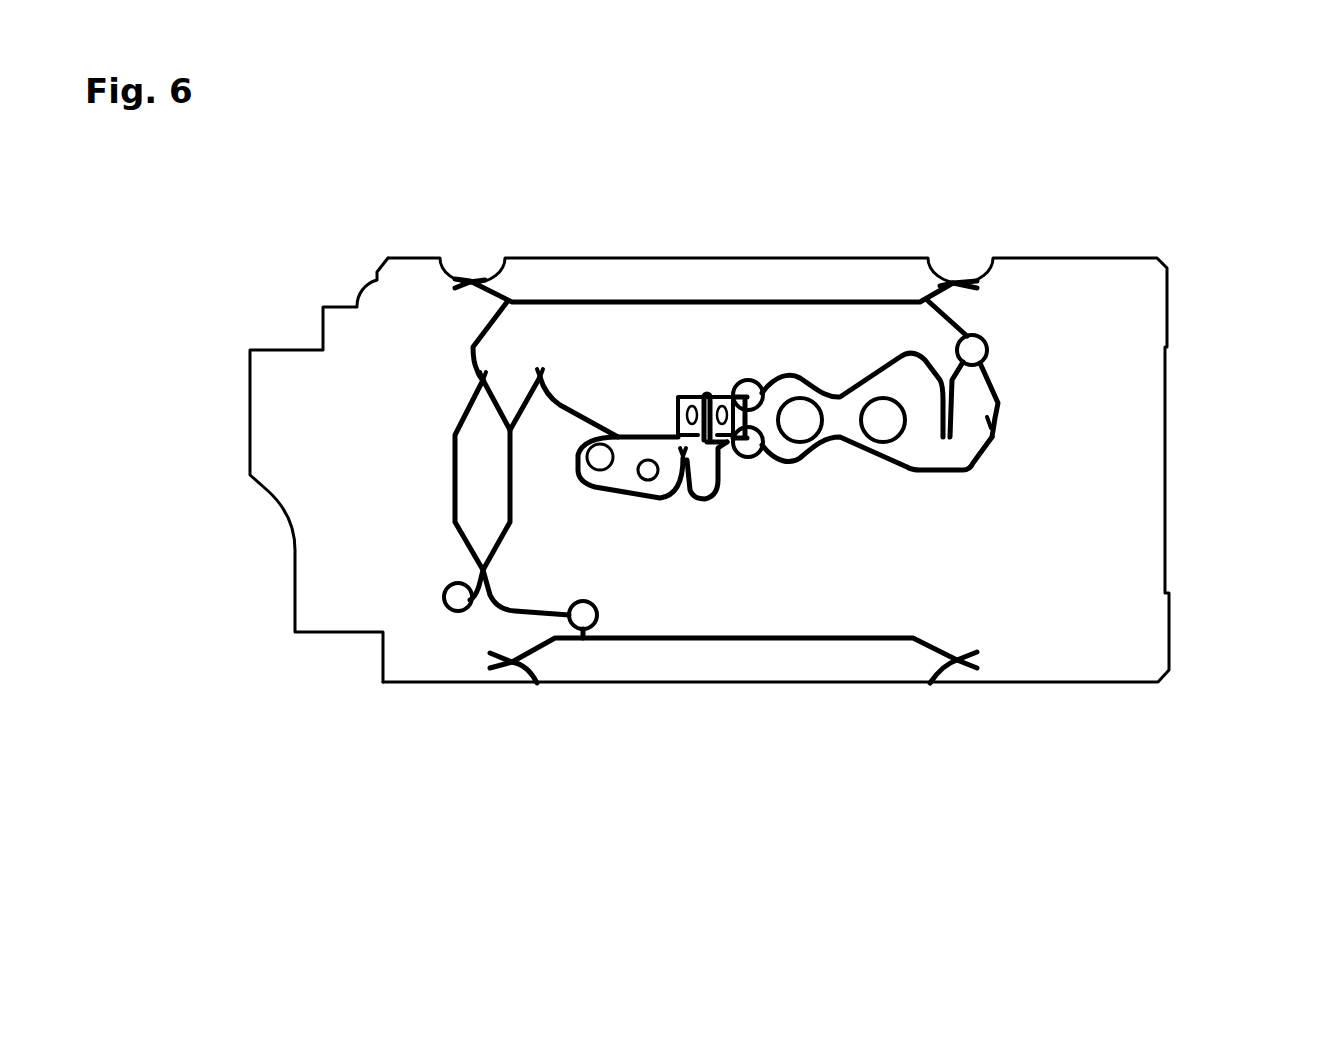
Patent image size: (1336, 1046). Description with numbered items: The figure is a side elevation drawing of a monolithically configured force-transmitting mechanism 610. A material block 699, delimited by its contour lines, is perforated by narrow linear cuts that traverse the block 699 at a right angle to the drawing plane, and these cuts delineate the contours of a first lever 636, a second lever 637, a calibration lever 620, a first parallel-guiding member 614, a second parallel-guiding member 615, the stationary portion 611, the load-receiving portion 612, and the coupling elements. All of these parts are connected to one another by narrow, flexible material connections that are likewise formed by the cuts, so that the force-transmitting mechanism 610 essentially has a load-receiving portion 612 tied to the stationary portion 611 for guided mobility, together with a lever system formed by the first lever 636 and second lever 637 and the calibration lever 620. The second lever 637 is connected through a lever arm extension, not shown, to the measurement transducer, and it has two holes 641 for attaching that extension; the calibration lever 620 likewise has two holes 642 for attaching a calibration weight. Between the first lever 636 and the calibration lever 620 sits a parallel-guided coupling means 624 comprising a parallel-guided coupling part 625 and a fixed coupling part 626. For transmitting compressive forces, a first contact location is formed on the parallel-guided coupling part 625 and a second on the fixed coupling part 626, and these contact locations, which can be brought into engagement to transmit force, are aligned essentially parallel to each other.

The force-transmitting mechanism 610 is at (752, 410).
The stationary portion 611 is at (1093, 393).
The load-receiving portion 612 is at (340, 565).
The first parallel-guiding member 614 is at (515, 278).
The second parallel-guiding member 615 is at (890, 668).
The calibration lever 620 is at (658, 649).
The parallel-guided coupling means 624 is at (649, 290).
The parallel-guided coupling part 625 is at (680, 400).
The fixed coupling part 626 is at (718, 397).
The first lever 636 is at (865, 304).
The second lever 637 is at (917, 387).
The holes 641 is at (883, 418).
The holes 642 is at (648, 470).
The material block 699 is at (616, 499).